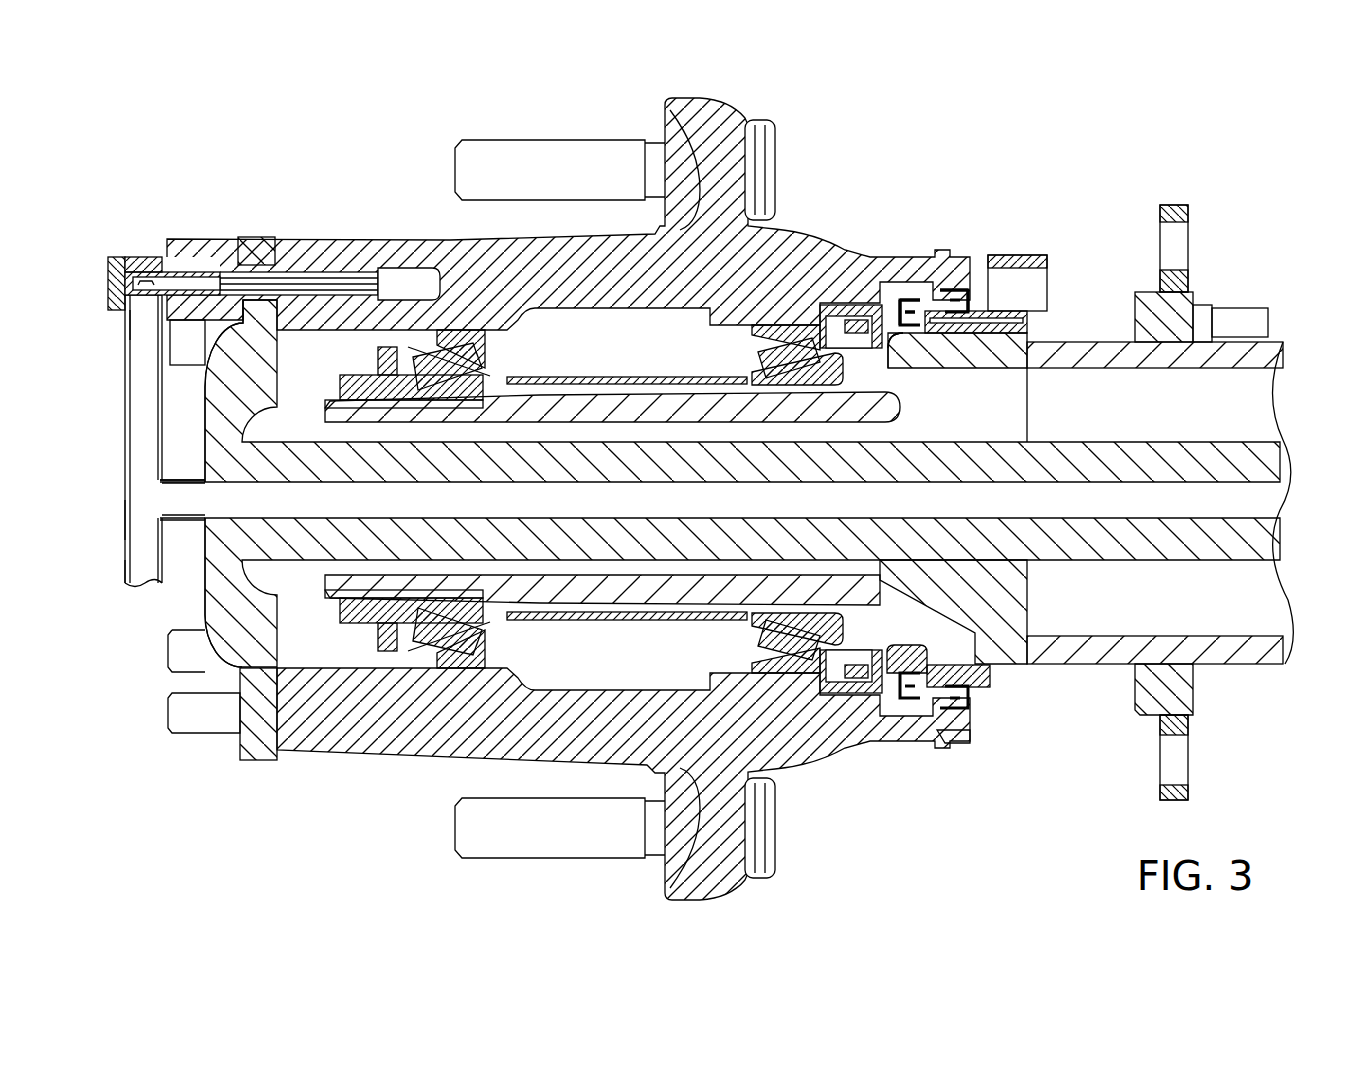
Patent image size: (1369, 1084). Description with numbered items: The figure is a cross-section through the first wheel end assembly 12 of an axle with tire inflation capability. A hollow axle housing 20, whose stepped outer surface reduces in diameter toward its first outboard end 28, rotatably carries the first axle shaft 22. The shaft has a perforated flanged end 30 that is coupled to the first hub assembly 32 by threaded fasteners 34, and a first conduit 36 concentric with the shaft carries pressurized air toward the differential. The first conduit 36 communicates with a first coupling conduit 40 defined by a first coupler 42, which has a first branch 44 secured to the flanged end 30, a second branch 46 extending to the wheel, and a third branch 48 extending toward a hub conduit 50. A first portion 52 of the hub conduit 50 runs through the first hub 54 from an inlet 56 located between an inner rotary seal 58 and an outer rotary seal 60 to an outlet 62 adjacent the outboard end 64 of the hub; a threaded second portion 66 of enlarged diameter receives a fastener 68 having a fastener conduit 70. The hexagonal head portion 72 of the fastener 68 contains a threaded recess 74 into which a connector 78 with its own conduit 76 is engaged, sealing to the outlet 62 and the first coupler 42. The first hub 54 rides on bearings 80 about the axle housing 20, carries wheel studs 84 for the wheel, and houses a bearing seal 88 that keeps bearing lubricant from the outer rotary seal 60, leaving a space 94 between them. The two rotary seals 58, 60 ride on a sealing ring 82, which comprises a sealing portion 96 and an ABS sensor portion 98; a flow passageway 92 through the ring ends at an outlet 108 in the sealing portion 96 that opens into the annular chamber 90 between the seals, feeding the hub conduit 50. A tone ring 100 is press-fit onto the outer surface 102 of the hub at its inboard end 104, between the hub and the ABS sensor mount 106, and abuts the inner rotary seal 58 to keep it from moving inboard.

The first wheel end assembly 12 is at (170, 150).
The axle housing 20 is at (572, 410).
The first axle shaft 22 is at (1285, 468).
The first outboard end 28 is at (272, 567).
The flanged end 30 is at (215, 438).
The first hub assembly 32 is at (330, 750).
The threaded fasteners 34 is at (168, 712).
The first conduit 36 is at (1268, 505).
The first coupling conduit 40 is at (155, 497).
The first coupler 42 is at (125, 522).
The first branch 44 is at (160, 460).
The second branch 46 is at (125, 578).
The third branch 48 is at (125, 365).
The hub conduit 50 is at (438, 330).
The first portion of the hub conduit 52 is at (778, 265).
The first hub 54 is at (368, 724).
The inlet 56 is at (935, 318).
The inner rotary seal 58 is at (975, 705).
The outer rotary seal 60 is at (905, 698).
The outlet 62 is at (225, 280).
The outboard end 64 is at (255, 237).
The second portion of the hub conduit 66 is at (340, 277).
The fastener 68 is at (308, 277).
The fastener conduit 70 is at (355, 277).
The head portion 72 is at (205, 240).
The recess 74 is at (128, 335).
The conduit 76 is at (135, 266).
The connector 78 is at (108, 280).
The bearings 80 is at (430, 350).
The sealing ring 82 is at (928, 678).
The wheel studs 84 is at (556, 140).
The bearing seal 88 is at (835, 305).
The chamber 90 is at (905, 305).
The flow passageway 92 is at (955, 312).
The space 94 is at (888, 680).
The sealing portion 96 is at (893, 360).
The ABS sensor portion 98 is at (958, 668).
The tone ring 100 is at (950, 290).
The outer surface 102 is at (930, 300).
The inboard end 104 is at (972, 300).
The ABS sensor mount 106 is at (1020, 255).
The outlet 108 is at (955, 334).